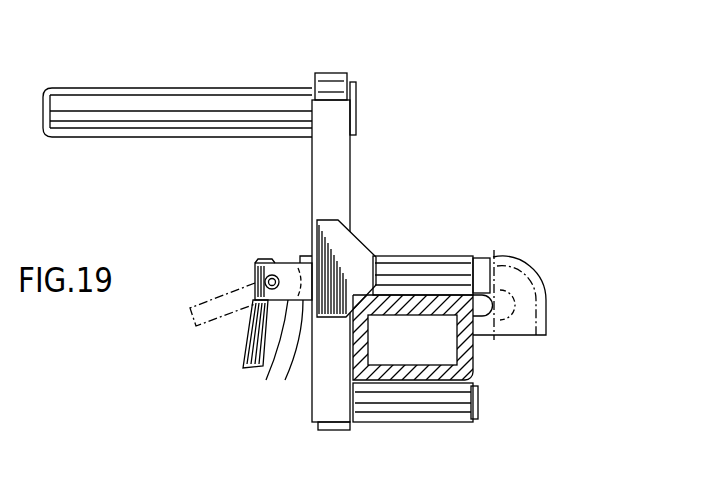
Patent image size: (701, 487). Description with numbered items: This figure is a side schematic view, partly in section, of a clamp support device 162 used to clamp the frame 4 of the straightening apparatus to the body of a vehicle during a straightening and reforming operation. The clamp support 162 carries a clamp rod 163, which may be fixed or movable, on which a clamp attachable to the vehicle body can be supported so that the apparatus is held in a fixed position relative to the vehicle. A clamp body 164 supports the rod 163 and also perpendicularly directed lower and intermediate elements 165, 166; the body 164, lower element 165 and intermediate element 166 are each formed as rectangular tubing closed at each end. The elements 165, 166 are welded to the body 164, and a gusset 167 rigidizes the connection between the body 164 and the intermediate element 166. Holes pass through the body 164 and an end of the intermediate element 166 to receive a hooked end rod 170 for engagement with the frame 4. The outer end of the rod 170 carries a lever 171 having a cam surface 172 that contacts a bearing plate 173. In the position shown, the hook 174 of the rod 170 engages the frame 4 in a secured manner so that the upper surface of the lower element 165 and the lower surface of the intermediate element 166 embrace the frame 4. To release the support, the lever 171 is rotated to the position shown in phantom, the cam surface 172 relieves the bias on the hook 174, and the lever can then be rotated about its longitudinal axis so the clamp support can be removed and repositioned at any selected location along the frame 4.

The frame 4 is at (468, 358).
The clamp support device 162 is at (333, 251).
The clamp rod 163 is at (132, 97).
The clamp body 164 is at (312, 172).
The lower element 165 is at (397, 413).
The intermediate element 166 is at (428, 272).
The gusset 167 is at (347, 243).
The hooked end rod 170 is at (487, 268).
The lever 171 is at (250, 340).
The cam surface 172 is at (276, 352).
The bearing plate 173 is at (293, 348).
The hook 174 is at (528, 325).